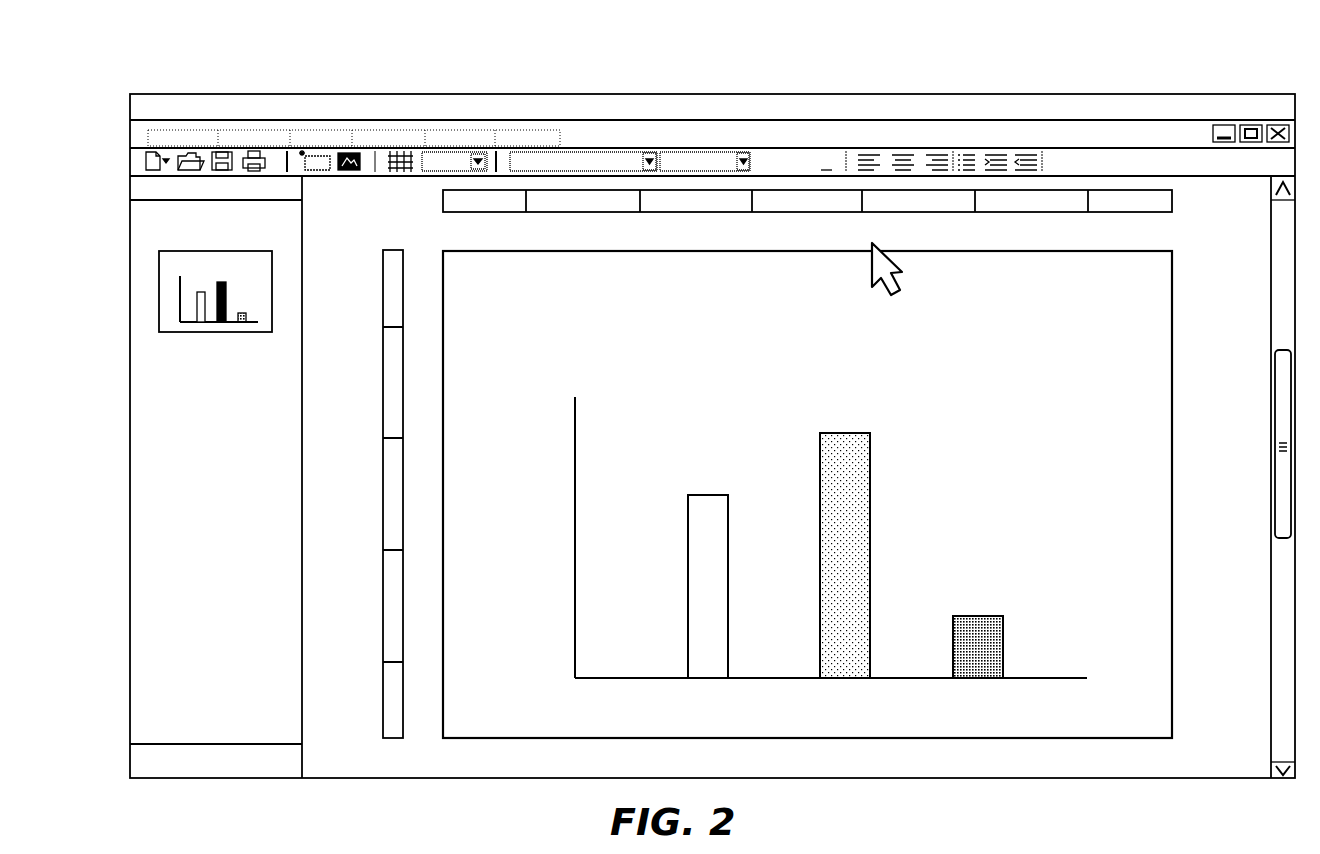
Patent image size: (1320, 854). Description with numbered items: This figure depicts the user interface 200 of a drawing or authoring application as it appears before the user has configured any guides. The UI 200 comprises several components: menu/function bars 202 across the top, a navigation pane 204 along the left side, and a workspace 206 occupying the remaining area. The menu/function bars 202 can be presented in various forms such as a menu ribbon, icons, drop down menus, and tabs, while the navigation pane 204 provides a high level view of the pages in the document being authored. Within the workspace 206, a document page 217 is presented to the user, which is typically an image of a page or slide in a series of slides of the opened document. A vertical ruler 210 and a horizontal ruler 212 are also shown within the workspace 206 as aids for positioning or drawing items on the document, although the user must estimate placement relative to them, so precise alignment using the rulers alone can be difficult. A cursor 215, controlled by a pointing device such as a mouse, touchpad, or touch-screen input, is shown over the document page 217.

The user interface 200 is at (120, 58).
The menu/function bars 202 is at (130, 148).
The navigation pane 204 is at (183, 433).
The workspace 206 is at (367, 752).
The vertical ruler 210 is at (378, 312).
The horizontal ruler 212 is at (443, 197).
The cursor 215 is at (870, 270).
The document page 217 is at (1173, 310).